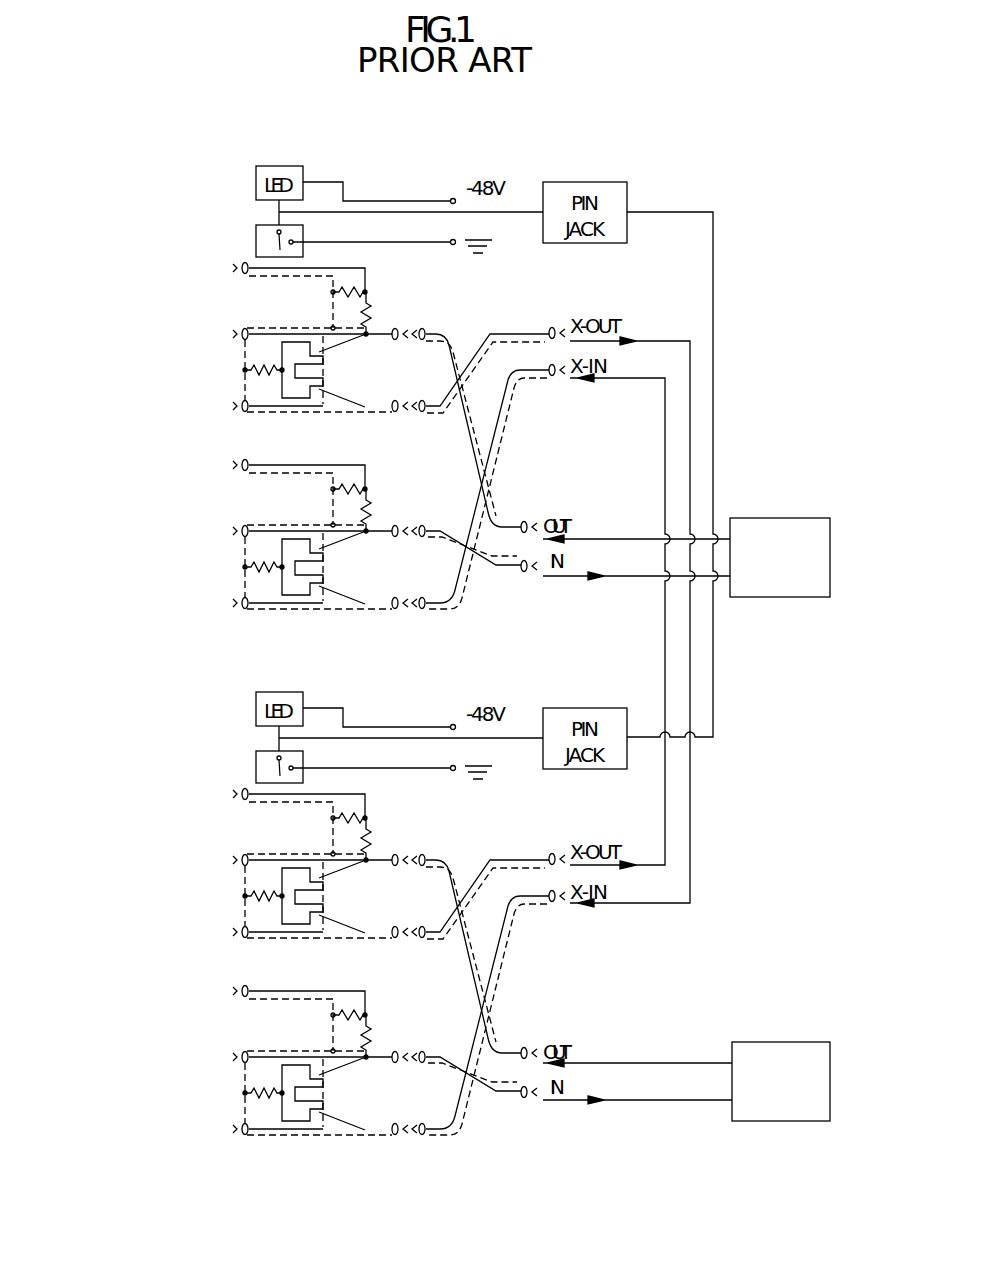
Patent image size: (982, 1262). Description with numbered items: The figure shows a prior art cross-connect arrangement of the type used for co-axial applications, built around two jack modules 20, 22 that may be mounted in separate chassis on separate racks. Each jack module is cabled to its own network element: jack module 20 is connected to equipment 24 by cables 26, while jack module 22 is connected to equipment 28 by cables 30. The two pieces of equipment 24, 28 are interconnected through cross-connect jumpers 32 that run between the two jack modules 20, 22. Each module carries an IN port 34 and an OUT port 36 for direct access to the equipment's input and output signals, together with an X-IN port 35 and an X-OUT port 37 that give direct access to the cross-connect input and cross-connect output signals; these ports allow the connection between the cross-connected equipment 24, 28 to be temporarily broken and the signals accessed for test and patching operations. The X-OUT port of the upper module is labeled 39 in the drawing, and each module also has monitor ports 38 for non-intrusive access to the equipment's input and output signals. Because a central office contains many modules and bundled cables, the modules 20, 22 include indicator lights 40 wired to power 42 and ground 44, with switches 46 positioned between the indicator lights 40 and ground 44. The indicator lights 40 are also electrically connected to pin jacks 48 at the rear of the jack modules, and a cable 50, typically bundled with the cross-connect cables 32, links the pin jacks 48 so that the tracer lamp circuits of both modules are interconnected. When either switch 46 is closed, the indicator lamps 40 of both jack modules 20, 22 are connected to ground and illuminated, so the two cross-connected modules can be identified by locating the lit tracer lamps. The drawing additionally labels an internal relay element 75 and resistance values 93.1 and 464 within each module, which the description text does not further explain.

The jack module 20 is at (148, 956).
The jack module 22 is at (148, 430).
The equipment 24 is at (808, 1042).
The cables 26 is at (613, 1062).
The equipment 28 is at (807, 518).
The cables 30 is at (612, 537).
The cross-connect jumpers 32 is at (663, 818).
The IN port 34 is at (290, 791).
The X-IN port 35 is at (282, 848).
The OUT port 36 is at (290, 594).
The X-OUT port 37 is at (282, 915).
The monitor port 38 is at (257, 645).
The X-OUT jack 39 is at (282, 389).
The indicator light 40 is at (258, 445).
The power 42 is at (479, 438).
The ground 44 is at (472, 534).
The switch 46 is at (331, 503).
The pin jack 48 is at (585, 450).
The cable 50 is at (713, 660).
The relay 75 is at (304, 732).
The resistor 93.1 is at (349, 661).
The resistor 464 is at (326, 675).